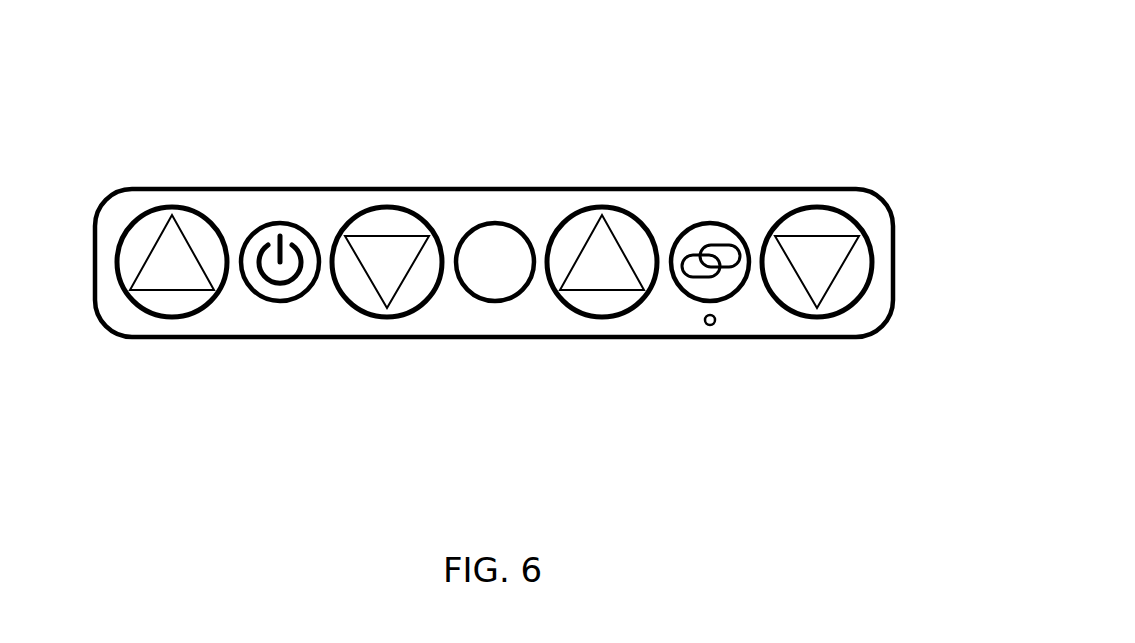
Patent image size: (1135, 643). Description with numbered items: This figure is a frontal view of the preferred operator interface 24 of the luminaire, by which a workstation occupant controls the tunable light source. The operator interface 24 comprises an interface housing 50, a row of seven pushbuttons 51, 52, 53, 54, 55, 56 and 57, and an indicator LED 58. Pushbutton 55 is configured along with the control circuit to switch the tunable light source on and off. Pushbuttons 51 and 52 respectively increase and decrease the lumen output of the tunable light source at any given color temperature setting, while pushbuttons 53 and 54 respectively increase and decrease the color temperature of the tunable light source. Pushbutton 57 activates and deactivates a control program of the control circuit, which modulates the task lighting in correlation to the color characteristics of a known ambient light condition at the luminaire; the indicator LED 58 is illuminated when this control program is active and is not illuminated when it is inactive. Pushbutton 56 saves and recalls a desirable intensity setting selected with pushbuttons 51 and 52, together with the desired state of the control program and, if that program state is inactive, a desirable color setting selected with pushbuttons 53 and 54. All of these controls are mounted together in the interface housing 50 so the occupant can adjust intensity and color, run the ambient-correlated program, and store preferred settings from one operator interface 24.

The operator interface 24 is at (872, 102).
The interface housing 50 is at (135, 188).
The pushbutton 51 is at (172, 318).
The pushbutton 52 is at (390, 318).
The pushbutton 53 is at (602, 318).
The pushbutton 54 is at (815, 318).
The pushbutton 55 is at (279, 223).
The pushbutton 56 is at (497, 223).
The pushbutton 57 is at (710, 223).
The indicator LED 58 is at (710, 327).